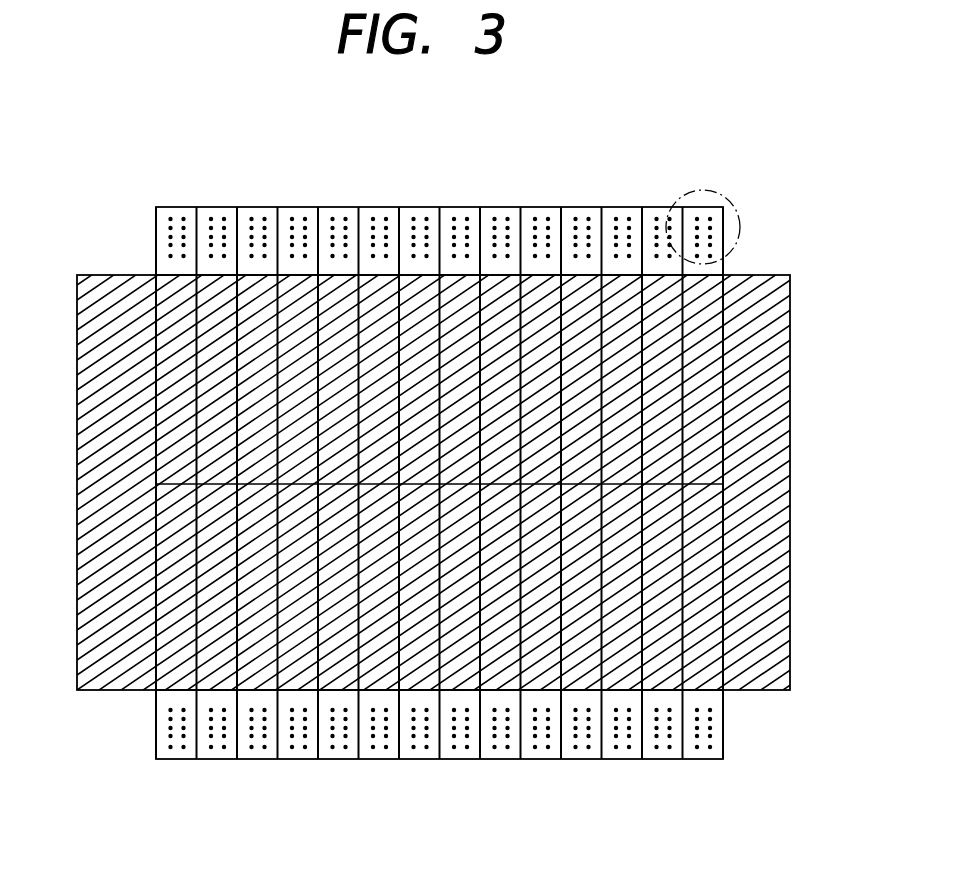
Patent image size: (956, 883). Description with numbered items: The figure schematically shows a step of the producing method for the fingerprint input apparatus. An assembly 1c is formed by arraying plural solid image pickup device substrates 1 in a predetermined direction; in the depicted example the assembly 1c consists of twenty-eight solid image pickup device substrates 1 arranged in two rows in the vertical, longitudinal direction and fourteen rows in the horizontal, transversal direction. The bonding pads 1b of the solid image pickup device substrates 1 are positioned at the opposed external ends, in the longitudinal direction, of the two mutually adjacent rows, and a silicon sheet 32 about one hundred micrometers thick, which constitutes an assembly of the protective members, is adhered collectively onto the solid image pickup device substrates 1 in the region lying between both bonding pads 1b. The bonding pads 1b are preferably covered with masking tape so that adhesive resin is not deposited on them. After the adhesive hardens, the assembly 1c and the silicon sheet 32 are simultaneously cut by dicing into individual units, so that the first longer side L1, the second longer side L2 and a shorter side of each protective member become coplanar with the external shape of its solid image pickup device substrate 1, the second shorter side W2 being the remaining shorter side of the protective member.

The solid image pickup device substrate 1 is at (182, 208).
The bonding pad 1b is at (735, 217).
The assembly 1c is at (729, 136).
The silicon sheet 32 is at (458, 670).
The second shorter side W2 is at (168, 275).
The first longer side L1 is at (150, 593).
The second longer side L2 is at (150, 370).